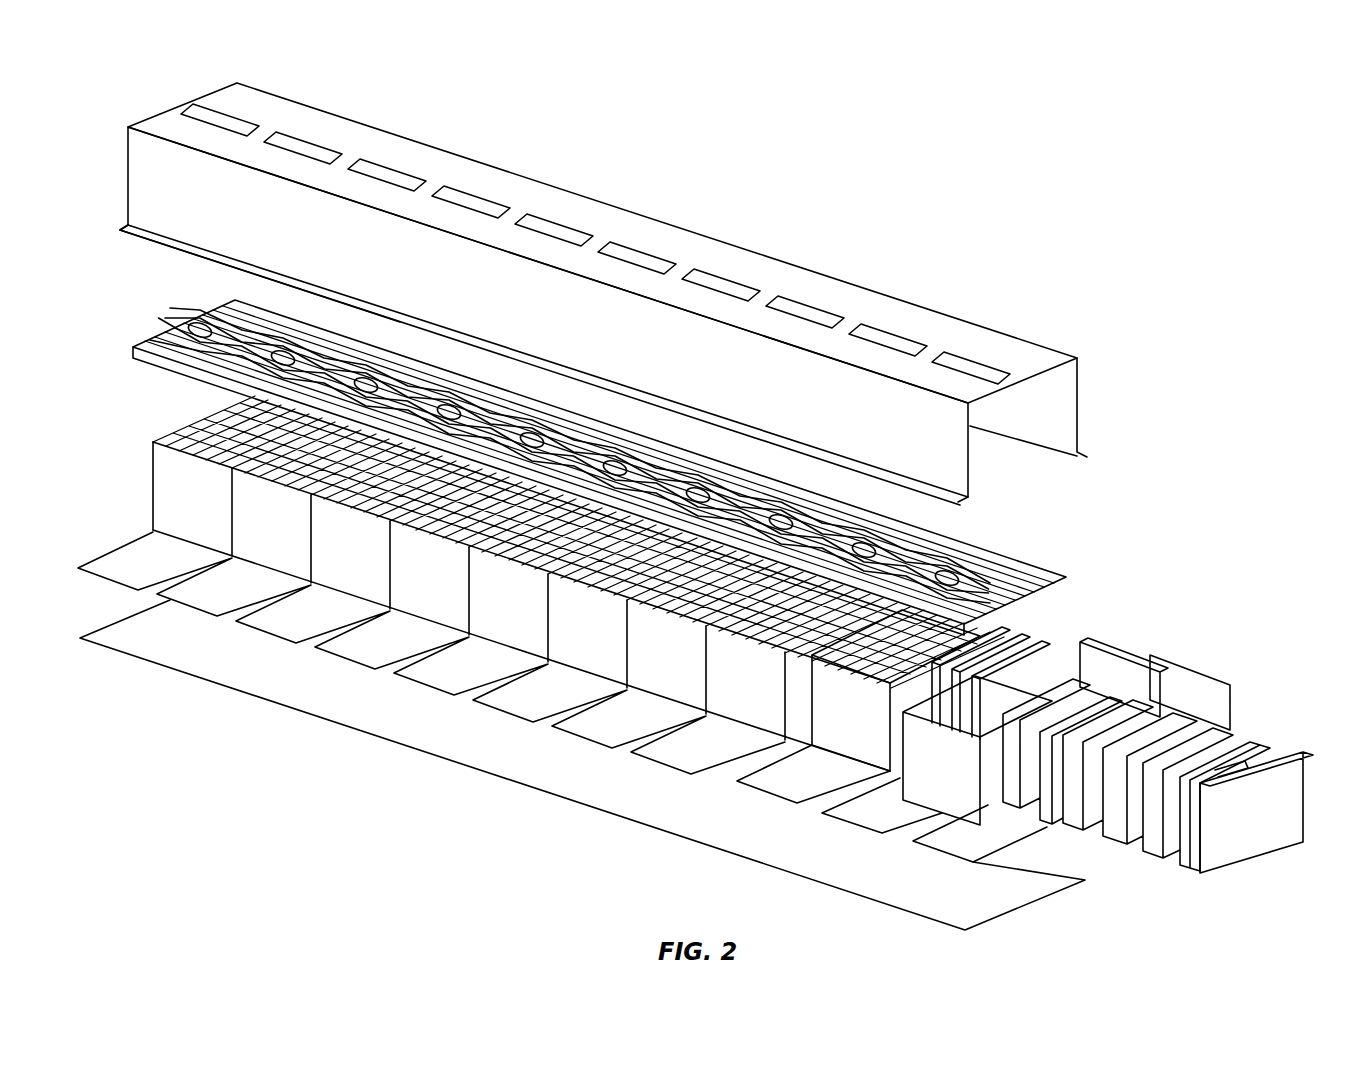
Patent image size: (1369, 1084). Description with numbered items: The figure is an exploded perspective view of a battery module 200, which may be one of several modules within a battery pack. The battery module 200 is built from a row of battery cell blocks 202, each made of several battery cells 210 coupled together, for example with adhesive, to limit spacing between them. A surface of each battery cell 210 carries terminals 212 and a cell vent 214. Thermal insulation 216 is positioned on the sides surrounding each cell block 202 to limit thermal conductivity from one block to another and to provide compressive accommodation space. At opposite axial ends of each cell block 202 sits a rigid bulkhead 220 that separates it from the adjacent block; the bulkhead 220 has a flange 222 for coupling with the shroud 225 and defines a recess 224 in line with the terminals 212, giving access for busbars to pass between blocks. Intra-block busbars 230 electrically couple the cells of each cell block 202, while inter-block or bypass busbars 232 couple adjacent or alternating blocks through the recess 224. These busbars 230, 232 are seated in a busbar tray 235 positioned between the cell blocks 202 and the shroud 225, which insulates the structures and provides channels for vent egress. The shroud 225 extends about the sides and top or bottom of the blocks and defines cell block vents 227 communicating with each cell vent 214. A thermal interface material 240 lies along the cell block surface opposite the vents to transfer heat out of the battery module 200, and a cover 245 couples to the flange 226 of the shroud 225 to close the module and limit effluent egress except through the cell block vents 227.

The battery module 200 is at (112, 112).
The battery cell block 202 is at (177, 495).
The battery cell 210 is at (1284, 753).
The terminals 212 is at (1268, 733).
The cell vent 214 is at (1204, 709).
The thermal insulation 216 is at (1094, 660).
The bulkhead 220 is at (1015, 653).
The flange 222 is at (906, 710).
The recess 224 is at (800, 650).
The shroud 225 is at (614, 294).
The flange 226 is at (126, 229).
The cell block vents 227 is at (893, 339).
The busbars 230 is at (593, 467).
The busbars 232 is at (950, 556).
The busbar tray 235 is at (134, 348).
The thermal interface material 240 is at (660, 766).
The cover 245 is at (753, 860).